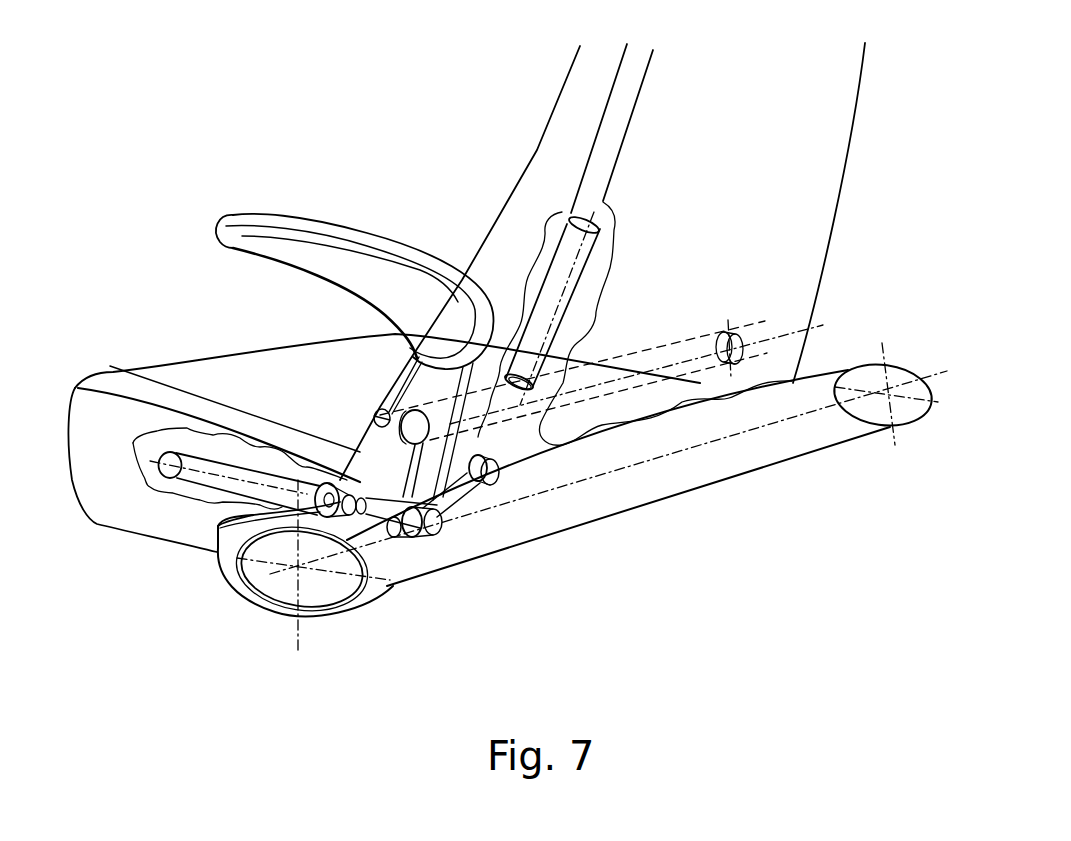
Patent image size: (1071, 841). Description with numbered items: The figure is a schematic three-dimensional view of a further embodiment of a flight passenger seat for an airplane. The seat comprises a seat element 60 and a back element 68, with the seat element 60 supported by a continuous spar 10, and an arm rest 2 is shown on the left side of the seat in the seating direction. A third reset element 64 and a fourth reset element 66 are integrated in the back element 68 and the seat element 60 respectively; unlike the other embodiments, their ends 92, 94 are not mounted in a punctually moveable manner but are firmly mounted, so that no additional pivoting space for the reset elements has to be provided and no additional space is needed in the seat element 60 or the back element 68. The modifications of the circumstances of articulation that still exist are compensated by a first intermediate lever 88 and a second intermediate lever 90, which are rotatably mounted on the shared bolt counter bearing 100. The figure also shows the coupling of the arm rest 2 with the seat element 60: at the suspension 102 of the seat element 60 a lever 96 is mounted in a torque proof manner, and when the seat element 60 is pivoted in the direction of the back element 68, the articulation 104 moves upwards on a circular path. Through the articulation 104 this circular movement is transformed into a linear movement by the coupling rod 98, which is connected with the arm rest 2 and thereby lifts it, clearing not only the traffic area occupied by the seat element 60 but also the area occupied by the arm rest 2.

The arm rest 2 is at (267, 242).
The spar 10 is at (313, 590).
The seat element 60 is at (85, 418).
The third reset element 64 is at (553, 272).
The fourth reset element 66 is at (222, 493).
The back element 68 is at (578, 120).
The first intermediate lever 88 is at (467, 500).
The second intermediate lever 90 is at (410, 543).
The end of reset element 92 is at (570, 212).
The end of reset element 94 is at (147, 483).
The lever 96 is at (398, 430).
The coupling rod 98 is at (398, 395).
The shared bolt counter bearing 100 is at (447, 493).
The suspension 102 is at (346, 490).
The articulation 104 is at (382, 410).